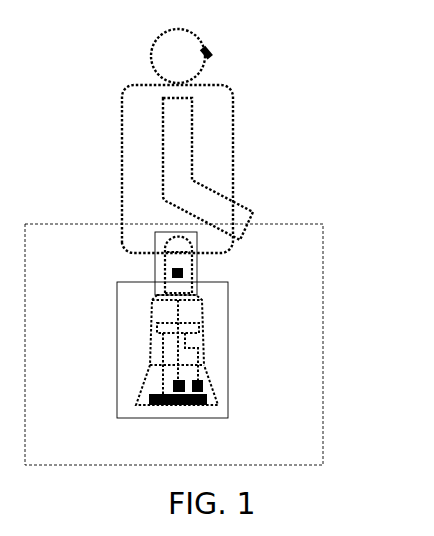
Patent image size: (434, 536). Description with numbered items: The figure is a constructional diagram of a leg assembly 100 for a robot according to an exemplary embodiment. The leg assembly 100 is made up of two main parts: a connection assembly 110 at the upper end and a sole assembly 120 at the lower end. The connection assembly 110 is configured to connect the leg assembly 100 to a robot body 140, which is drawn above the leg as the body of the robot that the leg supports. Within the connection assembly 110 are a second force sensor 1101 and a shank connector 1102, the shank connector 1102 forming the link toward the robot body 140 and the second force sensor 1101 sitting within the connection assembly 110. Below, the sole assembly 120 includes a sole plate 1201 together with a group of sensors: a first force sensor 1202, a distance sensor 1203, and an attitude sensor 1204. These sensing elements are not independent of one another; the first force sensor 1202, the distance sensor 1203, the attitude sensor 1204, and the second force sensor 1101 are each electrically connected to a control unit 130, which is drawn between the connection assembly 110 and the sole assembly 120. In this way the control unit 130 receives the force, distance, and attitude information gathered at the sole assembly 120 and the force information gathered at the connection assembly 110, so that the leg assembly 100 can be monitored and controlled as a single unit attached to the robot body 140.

The leg assembly 100 is at (302, 333).
The connection assembly 110 is at (155, 267).
The second force sensor 1101 is at (200, 275).
The shank connector 1102 is at (200, 263).
The sole assembly 120 is at (117, 350).
The sole plate 1201 is at (145, 385).
The first force sensor 1202 is at (177, 407).
The distance sensor 1203 is at (167, 386).
The attitude sensor 1204 is at (209, 381).
The control unit 130 is at (207, 325).
The robot body 140 is at (218, 162).